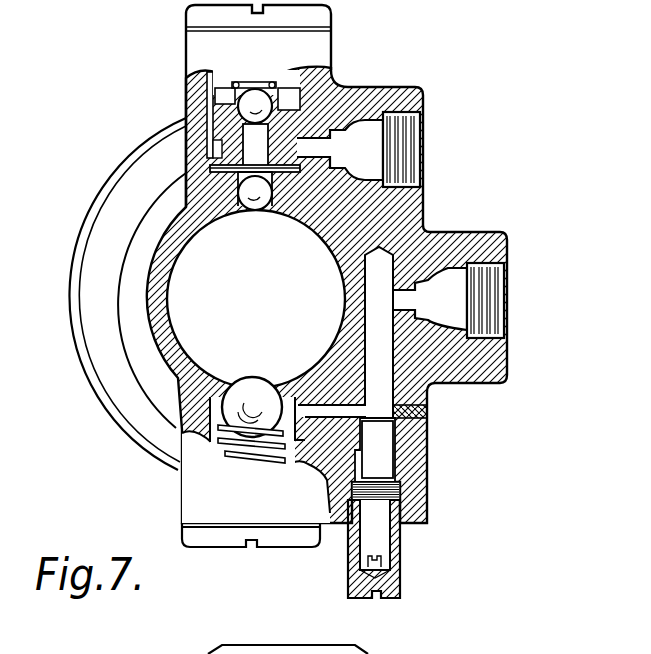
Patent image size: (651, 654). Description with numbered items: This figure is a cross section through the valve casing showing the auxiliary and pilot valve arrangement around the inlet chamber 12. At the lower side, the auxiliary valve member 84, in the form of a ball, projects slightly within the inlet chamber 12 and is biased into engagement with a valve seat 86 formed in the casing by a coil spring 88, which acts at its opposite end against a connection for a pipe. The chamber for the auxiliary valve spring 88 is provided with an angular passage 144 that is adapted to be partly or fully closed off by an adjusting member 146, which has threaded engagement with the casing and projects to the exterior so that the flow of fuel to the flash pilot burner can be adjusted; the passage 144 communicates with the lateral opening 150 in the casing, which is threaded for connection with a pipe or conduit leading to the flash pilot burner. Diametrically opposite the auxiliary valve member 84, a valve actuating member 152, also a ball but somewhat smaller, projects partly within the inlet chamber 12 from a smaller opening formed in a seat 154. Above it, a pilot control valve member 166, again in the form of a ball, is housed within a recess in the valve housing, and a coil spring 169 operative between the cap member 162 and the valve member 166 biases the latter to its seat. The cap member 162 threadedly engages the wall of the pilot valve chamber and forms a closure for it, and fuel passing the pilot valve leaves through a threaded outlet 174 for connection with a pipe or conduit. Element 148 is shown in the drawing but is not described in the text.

The inlet chamber 12 is at (183, 323).
The auxiliary valve member 84 is at (258, 386).
The valve seat 86 is at (186, 424).
The coil spring 88 is at (210, 446).
The angular passage 144 is at (380, 416).
The adjusting member 146 is at (380, 446).
The plug 148 is at (400, 556).
The lateral opening 150 is at (487, 334).
The valve actuating member 152 is at (262, 210).
The seat 154 is at (244, 206).
The cap member 162 is at (317, 18).
The pilot control valve member 166 is at (237, 102).
The coil spring 169 is at (236, 83).
The threaded outlet 174 is at (410, 150).